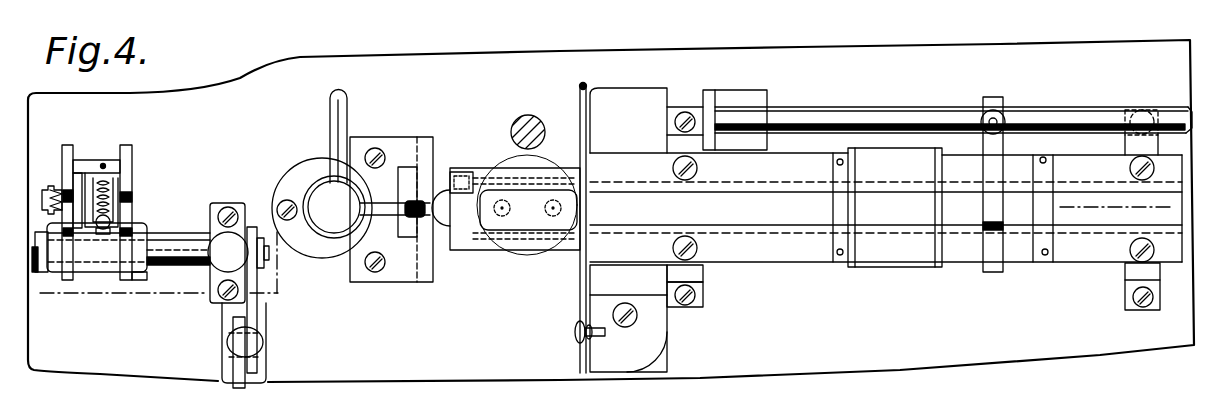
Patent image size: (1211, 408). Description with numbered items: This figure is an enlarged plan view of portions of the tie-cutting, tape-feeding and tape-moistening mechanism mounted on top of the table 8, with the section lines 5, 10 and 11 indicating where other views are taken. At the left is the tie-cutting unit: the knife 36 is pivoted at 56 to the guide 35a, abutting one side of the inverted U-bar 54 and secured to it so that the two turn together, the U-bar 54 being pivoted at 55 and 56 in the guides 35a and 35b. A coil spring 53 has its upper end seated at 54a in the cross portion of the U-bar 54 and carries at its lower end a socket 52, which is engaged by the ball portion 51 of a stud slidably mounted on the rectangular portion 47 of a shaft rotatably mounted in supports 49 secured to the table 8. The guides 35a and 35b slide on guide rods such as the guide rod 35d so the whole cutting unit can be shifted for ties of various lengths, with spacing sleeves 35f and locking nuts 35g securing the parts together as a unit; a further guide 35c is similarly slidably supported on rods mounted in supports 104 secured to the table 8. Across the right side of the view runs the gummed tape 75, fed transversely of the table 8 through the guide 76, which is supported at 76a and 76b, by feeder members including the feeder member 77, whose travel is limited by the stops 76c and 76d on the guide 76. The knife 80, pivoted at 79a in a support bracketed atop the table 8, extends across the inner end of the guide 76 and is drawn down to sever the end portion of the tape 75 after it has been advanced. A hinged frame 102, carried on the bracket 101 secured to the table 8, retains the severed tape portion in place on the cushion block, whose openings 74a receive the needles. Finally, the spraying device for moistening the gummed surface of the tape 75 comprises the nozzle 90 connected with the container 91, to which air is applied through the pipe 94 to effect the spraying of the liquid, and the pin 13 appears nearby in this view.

The section line 5- 5 is at (50, 288).
The table 8 is at (428, 372).
The section line 10- 10 is at (572, 143).
The section line 11- 11 is at (64, 214).
The pivot pin 13 is at (518, 124).
The guide 35a is at (72, 153).
The guide 35b is at (129, 170).
The guide 35c is at (994, 253).
The guide rod 35d is at (183, 247).
The spacing sleeve 35f is at (105, 265).
The locking nut 35g is at (140, 278).
The knife 36 is at (78, 180).
The rectangular portion of shaft 47 is at (177, 237).
The support 49 is at (222, 260).
The ball portion 51 is at (110, 229).
The socket 52 is at (109, 220).
The coil spring 53 is at (120, 182).
The inverted U-bar 54 is at (130, 162).
The spring seat 54a is at (104, 164).
The pivot 55 is at (112, 194).
The pivot 56 is at (58, 192).
The openings 74a is at (550, 215).
The gummed tape 75 is at (1087, 213).
The guide 76 is at (788, 164).
The support 76a is at (1130, 272).
The support 76b is at (696, 276).
The stop 76c is at (840, 258).
The stop 76d is at (1044, 258).
The feeder member 77 is at (878, 268).
The pivot 79a is at (577, 336).
The knife 80 is at (578, 106).
The nozzle 90 is at (413, 170).
The container 91 is at (321, 196).
The pipe 94 is at (347, 110).
The bracket 101 is at (393, 274).
The hinged frame 102 is at (438, 172).
The support 104 is at (712, 96).